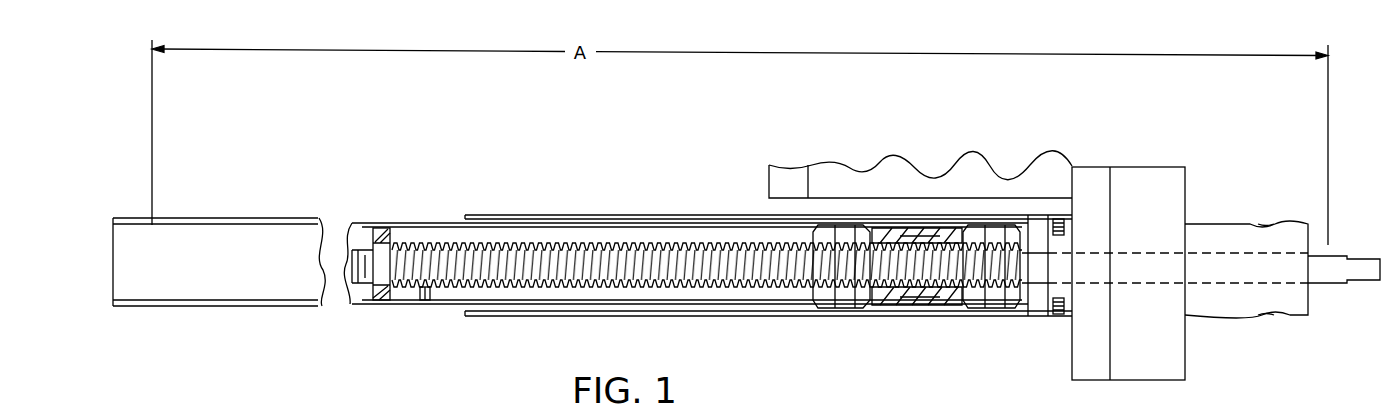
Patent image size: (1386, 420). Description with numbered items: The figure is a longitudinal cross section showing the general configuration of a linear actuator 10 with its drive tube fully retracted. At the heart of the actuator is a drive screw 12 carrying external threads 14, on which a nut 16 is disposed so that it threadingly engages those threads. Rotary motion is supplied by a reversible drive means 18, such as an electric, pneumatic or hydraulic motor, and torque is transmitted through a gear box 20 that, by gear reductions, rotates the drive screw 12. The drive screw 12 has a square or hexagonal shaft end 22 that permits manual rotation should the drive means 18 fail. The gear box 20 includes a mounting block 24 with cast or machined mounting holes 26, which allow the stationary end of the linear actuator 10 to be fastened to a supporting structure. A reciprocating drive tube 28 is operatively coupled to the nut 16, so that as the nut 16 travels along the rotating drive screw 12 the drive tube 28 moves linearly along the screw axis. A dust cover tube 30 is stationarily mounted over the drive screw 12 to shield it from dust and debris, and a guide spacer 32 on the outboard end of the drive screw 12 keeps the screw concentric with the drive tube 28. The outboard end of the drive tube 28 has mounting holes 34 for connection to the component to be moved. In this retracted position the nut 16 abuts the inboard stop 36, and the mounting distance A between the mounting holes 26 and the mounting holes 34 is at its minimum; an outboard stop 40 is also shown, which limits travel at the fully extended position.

The linear actuator 10 is at (547, 347).
The drive screw 12 is at (748, 287).
The external threads 14 is at (626, 243).
The nut 16 is at (973, 309).
The drive means 18 is at (1000, 165).
The gear box 20 is at (1168, 196).
The shaft end 22 is at (1370, 279).
The mounting block 24 is at (1226, 302).
The mounting holes 26 is at (1261, 224).
The drive tube 28 is at (388, 306).
The dust cover tube 30 is at (732, 215).
The guide spacer 32 is at (381, 236).
The mounting holes 34 is at (153, 218).
The inboard stop 36 is at (928, 309).
The outboard stop 40 is at (425, 301).